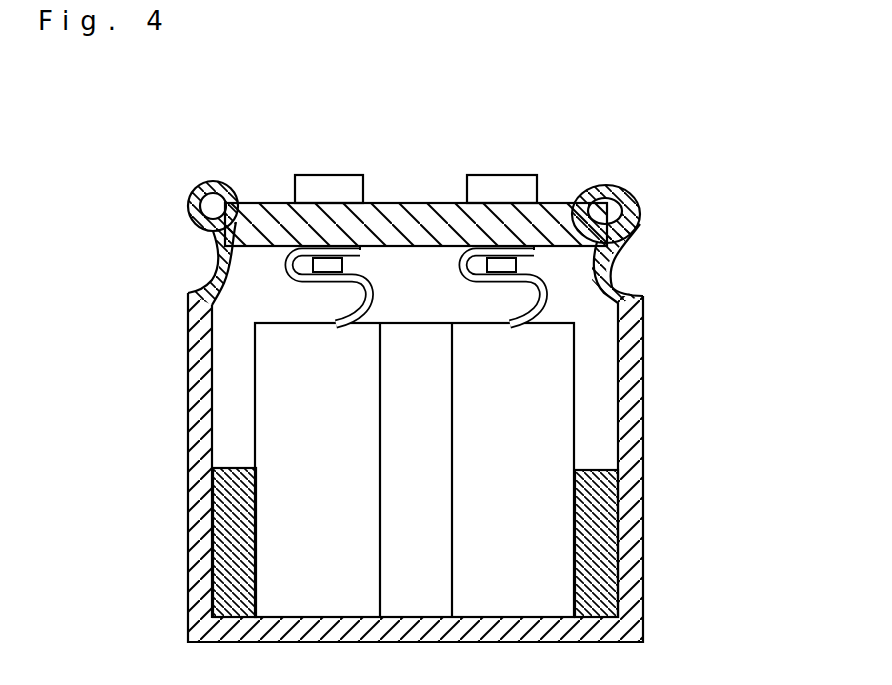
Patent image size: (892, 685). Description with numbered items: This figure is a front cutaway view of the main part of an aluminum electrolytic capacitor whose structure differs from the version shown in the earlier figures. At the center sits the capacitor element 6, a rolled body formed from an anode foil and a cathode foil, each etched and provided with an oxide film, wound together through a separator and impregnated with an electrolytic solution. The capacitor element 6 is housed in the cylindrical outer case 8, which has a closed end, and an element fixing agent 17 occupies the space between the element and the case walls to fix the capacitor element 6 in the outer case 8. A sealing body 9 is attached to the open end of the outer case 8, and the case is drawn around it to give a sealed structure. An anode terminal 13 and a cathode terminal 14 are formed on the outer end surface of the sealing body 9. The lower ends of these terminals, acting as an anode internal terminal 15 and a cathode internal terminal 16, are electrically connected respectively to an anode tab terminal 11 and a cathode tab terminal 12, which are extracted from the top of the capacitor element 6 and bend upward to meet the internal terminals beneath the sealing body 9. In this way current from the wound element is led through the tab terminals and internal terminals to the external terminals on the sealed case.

The capacitor element 6 is at (293, 425).
The outer case 8 is at (640, 368).
The sealing body 9 is at (627, 192).
The anode tab terminal 11 is at (293, 276).
The cathode tab terminal 12 is at (540, 290).
The anode terminal 13 is at (332, 182).
The cathode terminal 14 is at (500, 182).
The anode internal terminal 15 is at (352, 247).
The cathode internal terminal 16 is at (478, 249).
The element fixing agent 17 is at (605, 505).